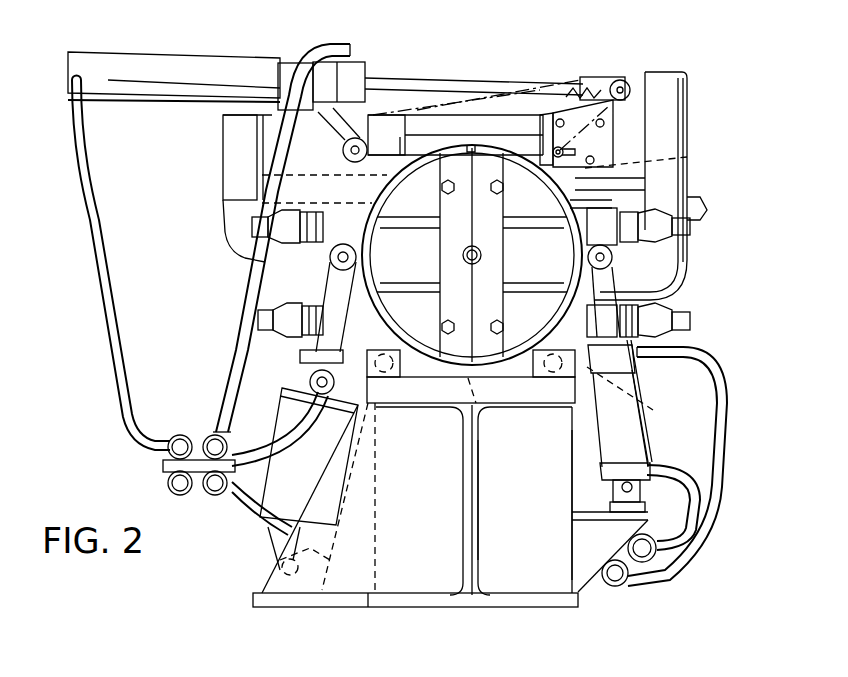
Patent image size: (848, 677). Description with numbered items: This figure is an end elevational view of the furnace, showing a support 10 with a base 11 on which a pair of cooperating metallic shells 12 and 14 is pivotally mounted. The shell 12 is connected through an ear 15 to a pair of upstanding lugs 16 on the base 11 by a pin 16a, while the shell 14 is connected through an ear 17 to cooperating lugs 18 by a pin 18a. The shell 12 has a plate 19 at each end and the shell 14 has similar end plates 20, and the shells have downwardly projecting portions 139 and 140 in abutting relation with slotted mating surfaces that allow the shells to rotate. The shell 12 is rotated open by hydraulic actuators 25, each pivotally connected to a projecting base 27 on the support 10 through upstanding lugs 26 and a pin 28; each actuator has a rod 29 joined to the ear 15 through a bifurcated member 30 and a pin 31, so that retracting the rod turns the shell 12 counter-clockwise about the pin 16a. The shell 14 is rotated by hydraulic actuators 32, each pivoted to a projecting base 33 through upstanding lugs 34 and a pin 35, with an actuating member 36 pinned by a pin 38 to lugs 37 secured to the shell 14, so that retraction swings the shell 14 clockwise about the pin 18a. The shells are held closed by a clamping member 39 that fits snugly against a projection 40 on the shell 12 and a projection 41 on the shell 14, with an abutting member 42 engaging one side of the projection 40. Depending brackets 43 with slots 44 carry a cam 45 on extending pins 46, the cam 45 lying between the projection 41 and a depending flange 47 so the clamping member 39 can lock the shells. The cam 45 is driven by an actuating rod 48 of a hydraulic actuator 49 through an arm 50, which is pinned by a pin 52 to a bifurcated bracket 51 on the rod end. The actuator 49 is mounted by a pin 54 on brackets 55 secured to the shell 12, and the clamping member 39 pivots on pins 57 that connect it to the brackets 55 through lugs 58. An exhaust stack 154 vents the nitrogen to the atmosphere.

The support 10 is at (468, 517).
The base 11 is at (580, 438).
The metallic shell 12 is at (370, 198).
The metallic shell 14 is at (585, 196).
The ear 15 is at (384, 358).
The upstanding lugs 16 is at (302, 372).
The pin 16a is at (393, 372).
The ear 17 is at (633, 370).
The lugs 18 is at (538, 385).
The pin 18a is at (650, 400).
The plate 19 is at (427, 267).
The end plates 20 is at (553, 267).
The hydraulic actuators 25 is at (279, 503).
The upstanding lugs 26 is at (276, 549).
The projecting base 27 is at (322, 600).
The pin 28 is at (270, 575).
The actuating member or rod 29 is at (313, 345).
The bifurcated member 30 is at (330, 287).
The pin 31 is at (336, 253).
The hydraulic actuators 32 is at (636, 445).
The projecting base 33 is at (577, 557).
The upstanding lugs 34 is at (641, 497).
The pin 35 is at (614, 498).
The actuating member or rod 36 is at (650, 304).
The lugs 37 is at (565, 350).
The pin 38 is at (613, 257).
The clamping member 39 is at (438, 126).
The projection 40 is at (472, 255).
The projection 41 is at (505, 143).
The abutting member 42 is at (405, 148).
The depending brackets 43 is at (607, 140).
The slots 44 is at (494, 255).
The cam 45 is at (540, 113).
The extending pins 46 is at (558, 150).
The depending flange 47 is at (690, 151).
The actuating rod 48 is at (403, 86).
The hydraulic actuator 49 is at (118, 66).
The arm 50 is at (618, 113).
The bifurcated bracket 51 is at (600, 82).
The pin 52 is at (624, 89).
The pin 54 is at (284, 75).
The brackets 55 is at (270, 86).
The pins 57 is at (351, 148).
The lugs 58 is at (262, 120).
The downwardly projecting portion 139 is at (445, 390).
The downwardly projecting portion 140 is at (507, 390).
The exhaust stack 154 is at (693, 201).